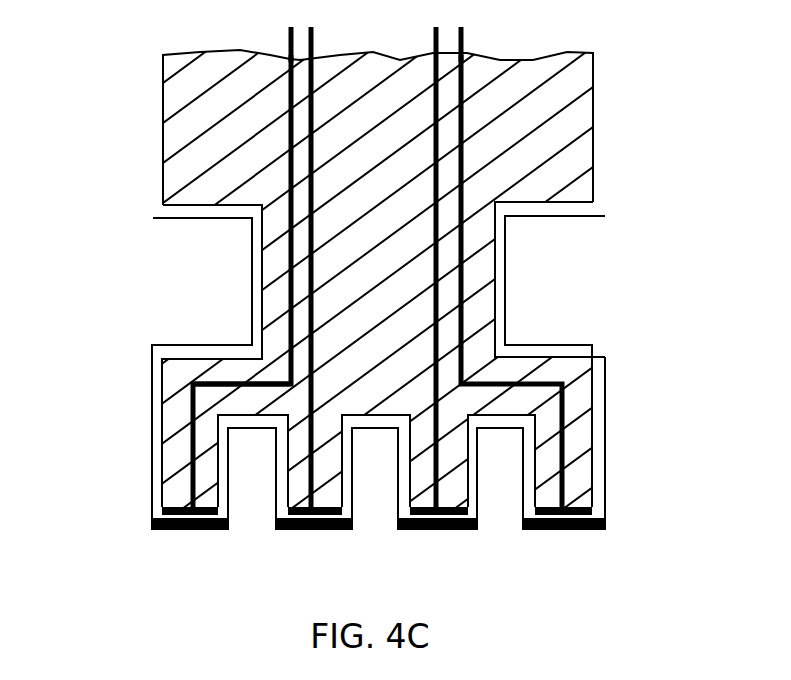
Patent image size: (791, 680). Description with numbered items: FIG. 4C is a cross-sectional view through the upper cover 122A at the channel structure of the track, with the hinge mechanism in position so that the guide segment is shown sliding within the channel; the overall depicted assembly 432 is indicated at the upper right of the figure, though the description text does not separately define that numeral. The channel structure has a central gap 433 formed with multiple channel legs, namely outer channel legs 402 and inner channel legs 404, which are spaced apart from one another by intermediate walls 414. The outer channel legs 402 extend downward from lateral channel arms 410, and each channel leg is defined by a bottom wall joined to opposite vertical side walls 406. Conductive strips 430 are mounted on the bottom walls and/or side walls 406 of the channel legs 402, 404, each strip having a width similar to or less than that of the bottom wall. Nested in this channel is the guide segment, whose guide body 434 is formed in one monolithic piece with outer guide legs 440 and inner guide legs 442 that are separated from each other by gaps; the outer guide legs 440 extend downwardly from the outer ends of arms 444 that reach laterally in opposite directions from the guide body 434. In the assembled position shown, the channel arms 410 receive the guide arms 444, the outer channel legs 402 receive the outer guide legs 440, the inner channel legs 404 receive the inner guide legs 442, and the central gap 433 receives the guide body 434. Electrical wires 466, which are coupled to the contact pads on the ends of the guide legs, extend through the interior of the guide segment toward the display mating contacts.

The upper cover 122A is at (155, 213).
The outer channel legs 402 is at (155, 486).
The inner channel legs 404 is at (347, 480).
The side walls 406 is at (606, 440).
The channel arms 410 is at (157, 353).
The intermediate walls 414 is at (520, 345).
The conductive strips 430 is at (223, 531).
The semiconductor structure 432 is at (648, 92).
The central gap 433 is at (510, 269).
The guide body 434 is at (388, 192).
The outer guide legs 440 is at (175, 424).
The inner guide legs 442 is at (334, 500).
The arms 444 is at (205, 370).
The electrical wires 466 is at (290, 48).